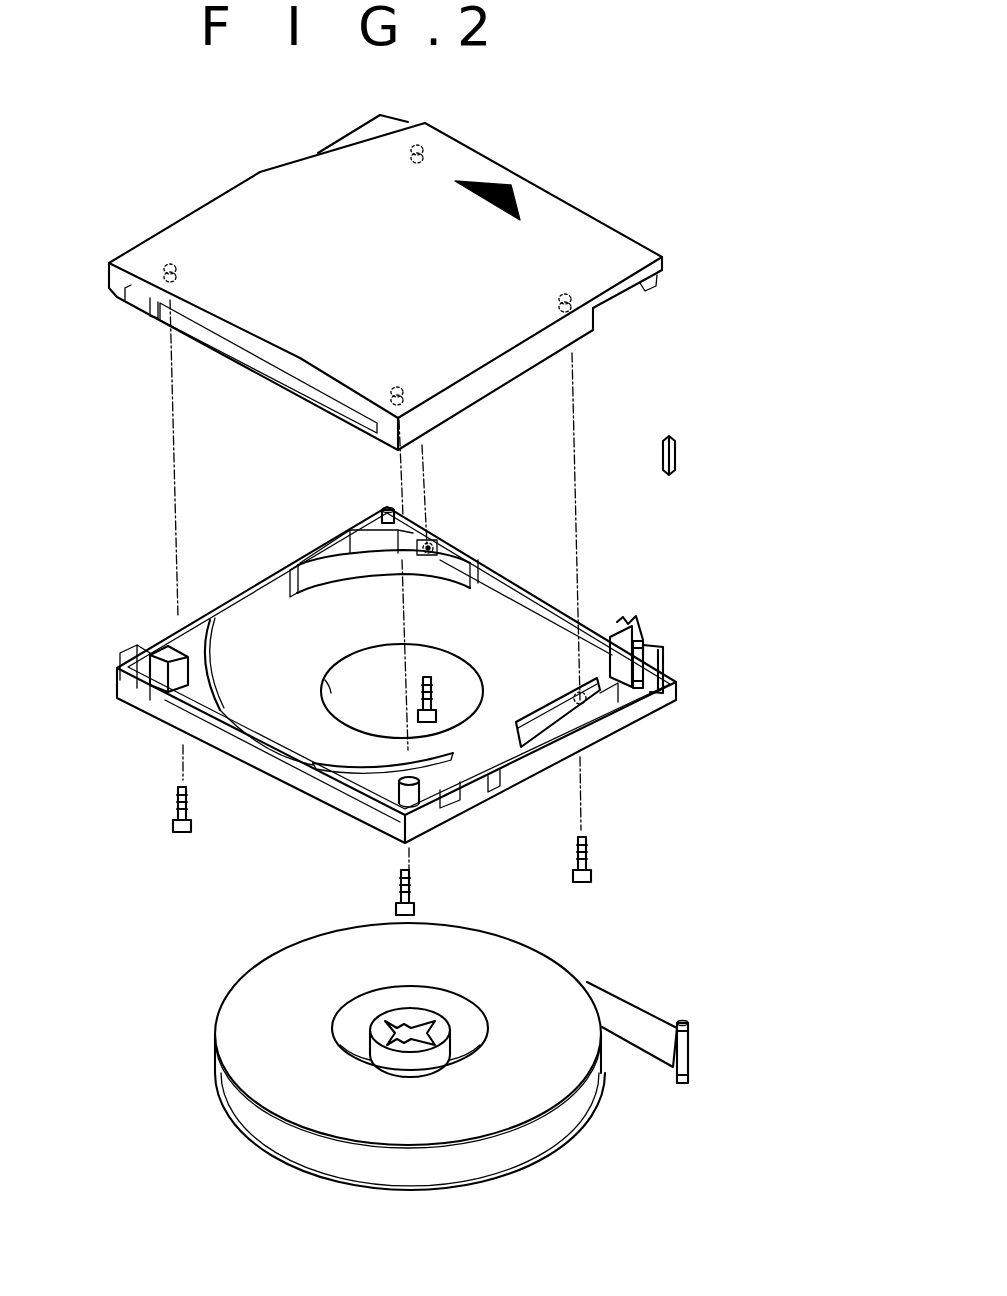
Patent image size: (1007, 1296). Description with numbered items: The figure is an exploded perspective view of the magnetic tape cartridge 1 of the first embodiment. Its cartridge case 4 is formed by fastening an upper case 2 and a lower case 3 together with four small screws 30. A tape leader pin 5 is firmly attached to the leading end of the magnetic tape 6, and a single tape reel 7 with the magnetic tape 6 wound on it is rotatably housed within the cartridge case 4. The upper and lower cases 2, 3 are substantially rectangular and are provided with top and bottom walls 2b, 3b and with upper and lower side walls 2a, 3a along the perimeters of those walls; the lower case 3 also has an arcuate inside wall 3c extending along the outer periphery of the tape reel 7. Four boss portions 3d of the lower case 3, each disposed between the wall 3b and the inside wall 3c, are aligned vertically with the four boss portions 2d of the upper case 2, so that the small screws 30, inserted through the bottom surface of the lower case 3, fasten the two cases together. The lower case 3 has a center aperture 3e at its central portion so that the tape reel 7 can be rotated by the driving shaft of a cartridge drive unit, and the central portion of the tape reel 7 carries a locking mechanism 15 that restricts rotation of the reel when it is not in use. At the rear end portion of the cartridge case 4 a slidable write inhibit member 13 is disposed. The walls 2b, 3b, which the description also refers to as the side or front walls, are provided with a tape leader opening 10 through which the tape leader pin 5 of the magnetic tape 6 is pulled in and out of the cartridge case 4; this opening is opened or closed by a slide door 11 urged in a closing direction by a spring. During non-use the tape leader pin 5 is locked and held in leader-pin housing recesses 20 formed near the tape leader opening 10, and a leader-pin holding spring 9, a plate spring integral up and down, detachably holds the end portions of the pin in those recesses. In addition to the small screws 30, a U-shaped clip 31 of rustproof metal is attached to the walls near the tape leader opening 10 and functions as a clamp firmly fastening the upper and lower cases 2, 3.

The magnetic tape cartridge 1 is at (127, 137).
The upper case 2 is at (383, 279).
The upper side wall 2a is at (573, 227).
The top wall 2b is at (255, 362).
The boss portions of upper case 2d is at (422, 146).
The lower case 3 is at (404, 676).
The lower side wall 3a is at (265, 630).
The bottom wall 3b is at (250, 738).
The arcuate inside wall 3c is at (353, 573).
The boss portions of lower case 3d is at (183, 653).
The center aperture 3e is at (330, 678).
The cartridge case 4 is at (527, 461).
The tape leader pin 5 is at (673, 667).
The magnetic tape 6 is at (610, 660).
The tape reel 7 is at (270, 970).
The leader-pin holding spring 9 is at (634, 628).
The tape leader opening 10 is at (620, 700).
The slide door 11 is at (542, 703).
The write inhibit member 13 is at (145, 692).
The locking mechanism 15 is at (415, 1010).
The leader-pin housing recess 20 is at (657, 700).
The small screws 30 is at (193, 828).
The clip 31 is at (683, 453).